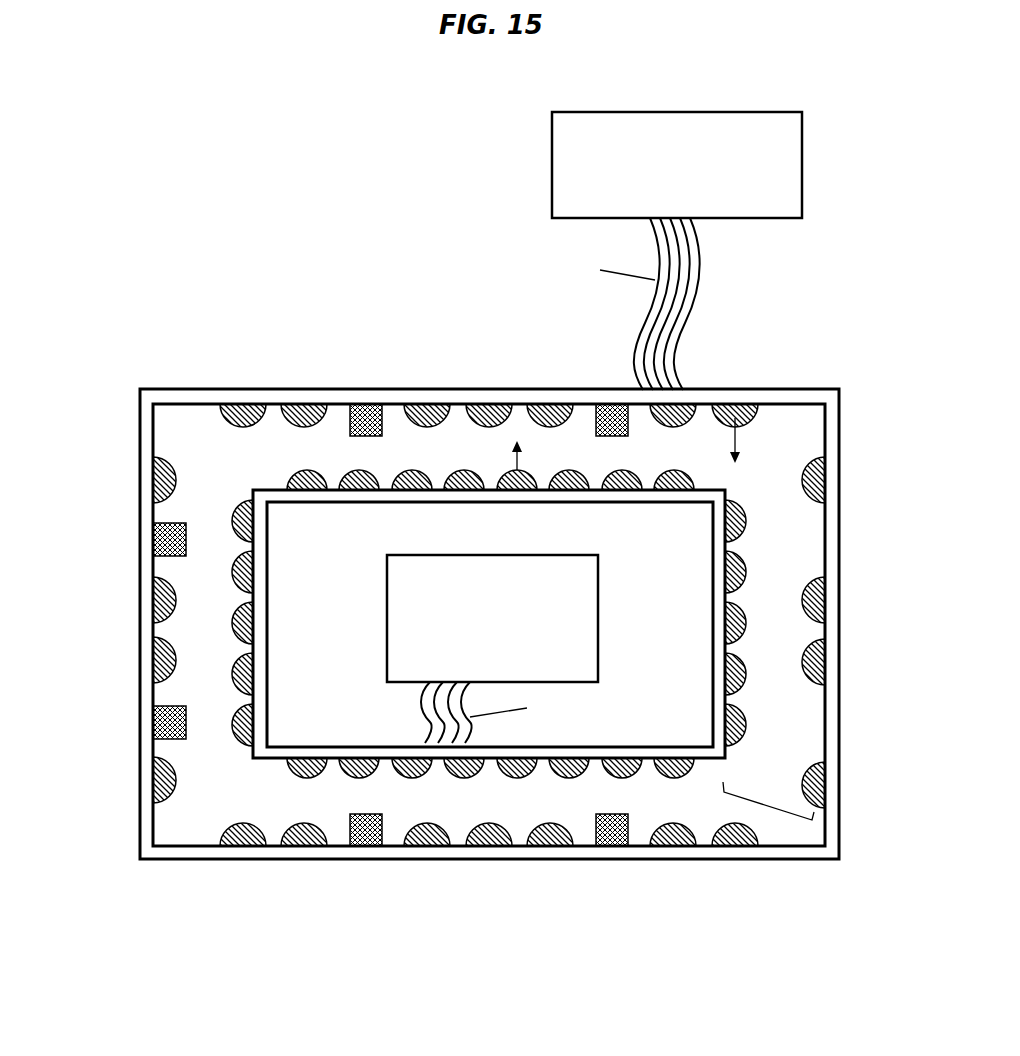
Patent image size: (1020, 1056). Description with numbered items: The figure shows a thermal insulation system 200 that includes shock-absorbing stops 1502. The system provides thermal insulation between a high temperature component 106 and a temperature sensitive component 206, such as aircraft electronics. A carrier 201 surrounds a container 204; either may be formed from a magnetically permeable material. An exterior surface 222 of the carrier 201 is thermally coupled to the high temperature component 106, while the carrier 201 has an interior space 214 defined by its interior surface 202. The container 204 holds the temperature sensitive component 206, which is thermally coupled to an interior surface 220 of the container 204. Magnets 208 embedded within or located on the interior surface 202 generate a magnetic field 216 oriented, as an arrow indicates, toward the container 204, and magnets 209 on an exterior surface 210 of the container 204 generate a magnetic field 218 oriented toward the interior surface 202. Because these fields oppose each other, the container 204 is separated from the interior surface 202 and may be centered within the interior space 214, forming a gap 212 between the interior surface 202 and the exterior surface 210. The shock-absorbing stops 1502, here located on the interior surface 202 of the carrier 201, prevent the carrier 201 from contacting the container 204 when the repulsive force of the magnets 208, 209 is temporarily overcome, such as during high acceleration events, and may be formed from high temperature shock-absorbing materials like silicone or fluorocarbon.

The thermal insulation system 200 is at (325, 222).
The high temperature component 106 is at (659, 202).
The carrier 201 is at (828, 390).
The interior surface 202 is at (812, 718).
The container 204 is at (727, 600).
The temperature sensitive component 206 is at (473, 672).
The magnets 208 is at (752, 420).
The magnets 209 is at (467, 470).
The exterior surface 210 is at (269, 480).
The gap 212 is at (765, 806).
The interior space 214 is at (180, 428).
The magnetic field 216 is at (733, 443).
The magnetic field 218 is at (519, 458).
The interior surface 220 is at (365, 738).
The exterior surface 222 is at (128, 500).
The shock-absorbing stops 1502 is at (350, 814).